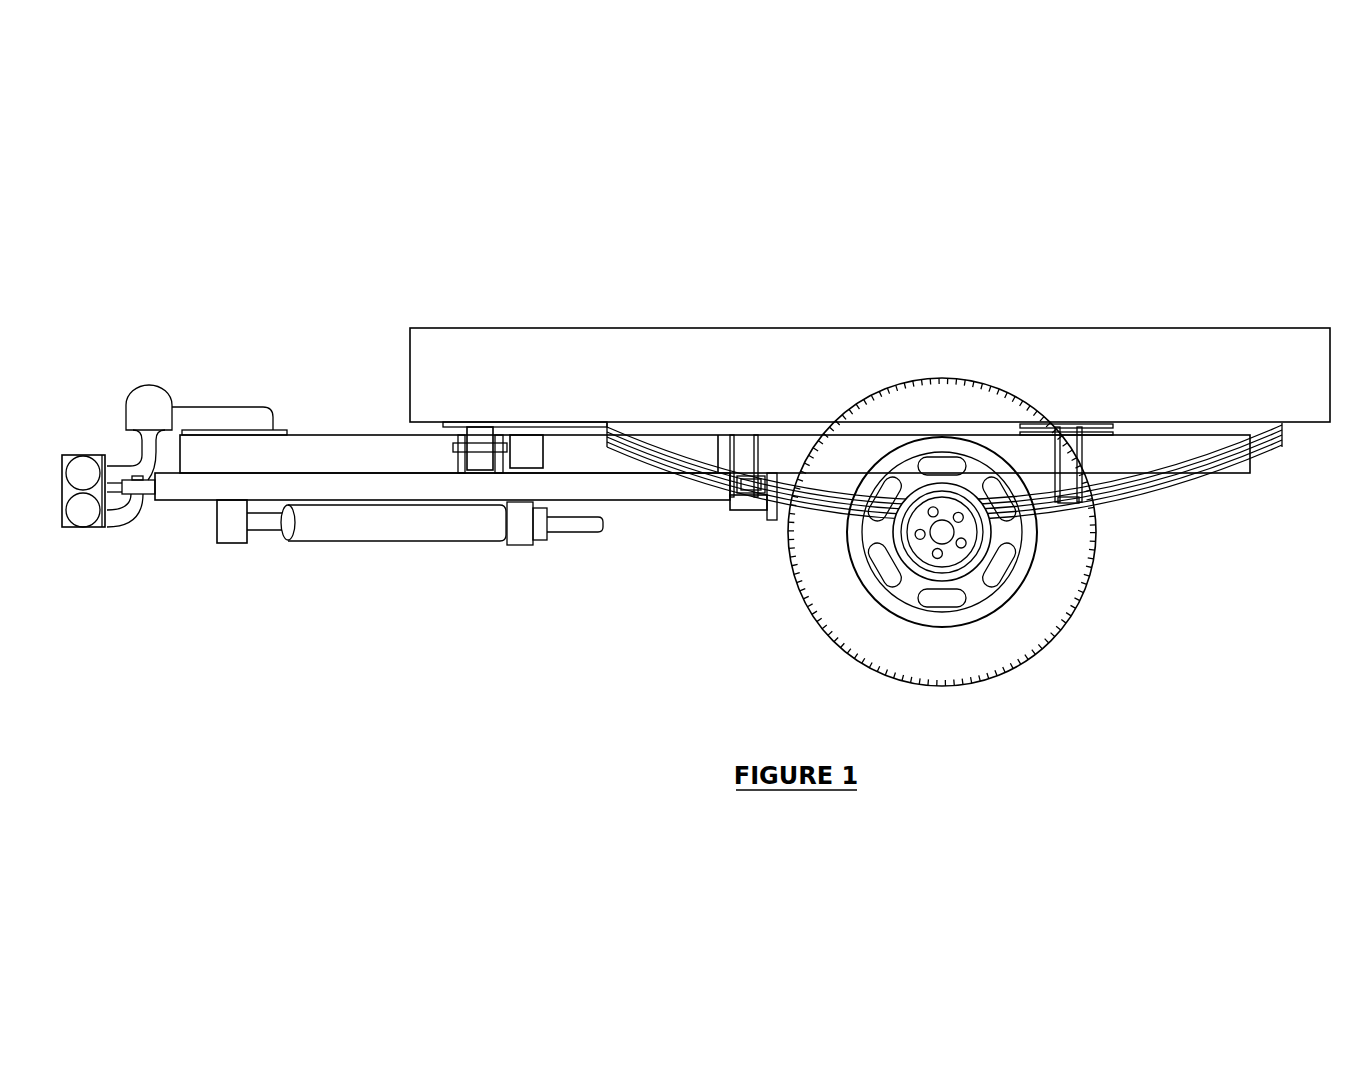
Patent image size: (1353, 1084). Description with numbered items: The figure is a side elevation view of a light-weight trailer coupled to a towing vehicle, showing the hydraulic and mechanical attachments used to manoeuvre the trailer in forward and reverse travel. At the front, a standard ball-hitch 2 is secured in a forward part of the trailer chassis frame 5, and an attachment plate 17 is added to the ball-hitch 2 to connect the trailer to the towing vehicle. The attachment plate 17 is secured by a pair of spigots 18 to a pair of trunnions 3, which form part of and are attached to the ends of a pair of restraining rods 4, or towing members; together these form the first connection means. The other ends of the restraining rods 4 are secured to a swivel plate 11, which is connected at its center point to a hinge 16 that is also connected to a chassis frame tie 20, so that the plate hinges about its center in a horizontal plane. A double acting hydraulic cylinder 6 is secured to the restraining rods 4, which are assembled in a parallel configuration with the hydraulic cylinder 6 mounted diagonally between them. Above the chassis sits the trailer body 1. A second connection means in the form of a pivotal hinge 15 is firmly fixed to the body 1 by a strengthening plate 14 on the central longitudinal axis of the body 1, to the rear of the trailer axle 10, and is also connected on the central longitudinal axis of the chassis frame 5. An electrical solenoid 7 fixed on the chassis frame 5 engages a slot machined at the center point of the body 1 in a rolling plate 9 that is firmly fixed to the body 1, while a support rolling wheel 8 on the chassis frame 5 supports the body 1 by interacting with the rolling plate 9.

The trailer body 1 is at (620, 327).
The ball-hitch 2 is at (156, 386).
The trunnions 3 is at (138, 497).
The restraining rods 4 is at (197, 502).
The chassis frame 5 is at (322, 442).
The double acting hydraulic cylinder 6 is at (400, 541).
The electrical solenoid 7 is at (545, 453).
The support rolling wheel 8 is at (480, 460).
The rolling plate 9 is at (463, 440).
The trailer axle 10 is at (942, 532).
The swivel plate 11 is at (753, 512).
The strengthening plate 14 is at (1068, 425).
The pivotal hinge 15 is at (1083, 448).
The hinge 16 is at (745, 478).
The attachment plate 17 is at (108, 455).
The spigots 18 is at (118, 527).
The chassis frame tie 20 is at (723, 453).